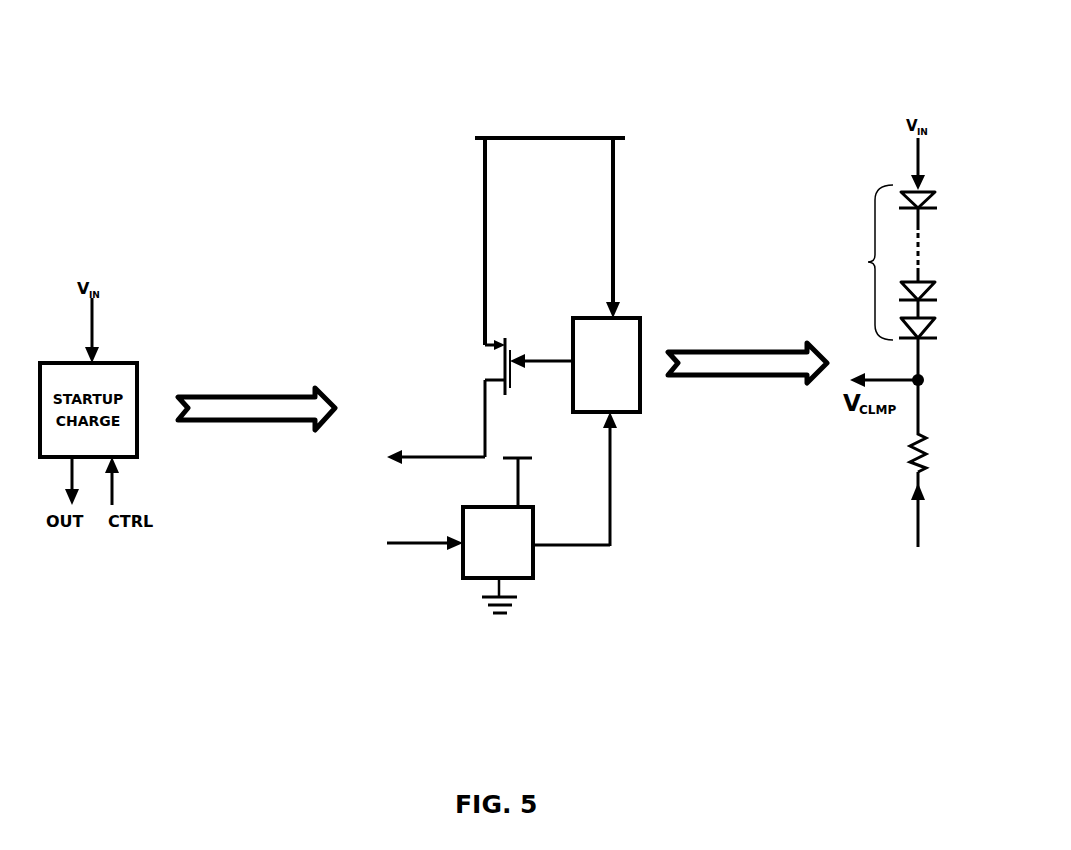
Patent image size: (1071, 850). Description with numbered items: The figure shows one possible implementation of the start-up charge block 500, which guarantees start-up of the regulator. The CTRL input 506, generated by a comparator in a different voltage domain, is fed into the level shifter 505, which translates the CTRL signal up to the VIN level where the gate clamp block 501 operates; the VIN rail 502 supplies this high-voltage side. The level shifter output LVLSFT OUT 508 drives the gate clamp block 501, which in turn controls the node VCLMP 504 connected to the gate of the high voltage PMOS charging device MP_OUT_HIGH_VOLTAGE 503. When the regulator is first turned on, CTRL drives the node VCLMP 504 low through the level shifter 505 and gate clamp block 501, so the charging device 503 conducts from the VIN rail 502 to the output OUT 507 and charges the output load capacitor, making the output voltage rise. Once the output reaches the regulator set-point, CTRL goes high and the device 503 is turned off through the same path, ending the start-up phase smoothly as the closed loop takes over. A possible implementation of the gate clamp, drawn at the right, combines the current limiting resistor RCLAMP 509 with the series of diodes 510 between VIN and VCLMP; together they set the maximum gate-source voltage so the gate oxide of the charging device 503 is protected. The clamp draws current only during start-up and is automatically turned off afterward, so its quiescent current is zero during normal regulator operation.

The start-up charge block 500 is at (292, 210).
The gate clamp block 501 is at (652, 307).
The input voltage VIN supply rail 502 is at (567, 118).
The high voltage PMOS charging device MP_OUT_HIGH_VOLTAGE 503 is at (471, 344).
The node VCLMP 504 is at (530, 328).
The level shifter 505 is at (535, 592).
The control signal CTRL input 506 is at (398, 557).
The output OUT 507 is at (379, 476).
The level shifter output LVLSFT OUT 508 is at (906, 540).
The current limiting resistor RCLAMP 509 is at (894, 468).
The series of diodes 510 is at (875, 262).